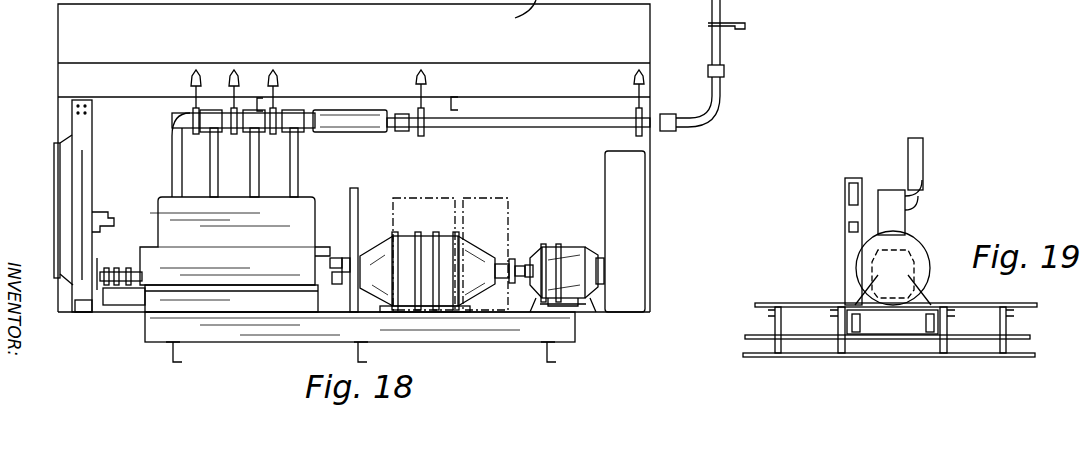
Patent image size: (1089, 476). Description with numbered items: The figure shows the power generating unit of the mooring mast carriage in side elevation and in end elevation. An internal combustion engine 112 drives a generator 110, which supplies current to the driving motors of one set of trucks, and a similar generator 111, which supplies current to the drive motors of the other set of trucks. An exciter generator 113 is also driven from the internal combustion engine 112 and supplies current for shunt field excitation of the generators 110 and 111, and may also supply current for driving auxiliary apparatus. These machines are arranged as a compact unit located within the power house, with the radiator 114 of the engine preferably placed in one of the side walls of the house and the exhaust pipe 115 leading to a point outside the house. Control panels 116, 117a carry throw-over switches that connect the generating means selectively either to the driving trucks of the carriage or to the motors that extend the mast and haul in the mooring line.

In FIG. 18, the generator 110 is at (440, 248).
In FIG. 18, the generator 111 is at (402, 246).
In FIG. 18, the internal combustion engine 112 is at (298, 196).
In FIG. 19, the internal combustion engine 112 is at (885, 190).
In FIG. 18, the exciter generator 113 is at (548, 252).
In FIG. 18, the radiator 114 is at (68, 192).
In FIG. 18, the exhaust pipe 115 is at (528, 130).
In FIG. 18, the control panel 116 is at (418, 198).
In FIG. 18, the compressor unit 117a is at (480, 200).